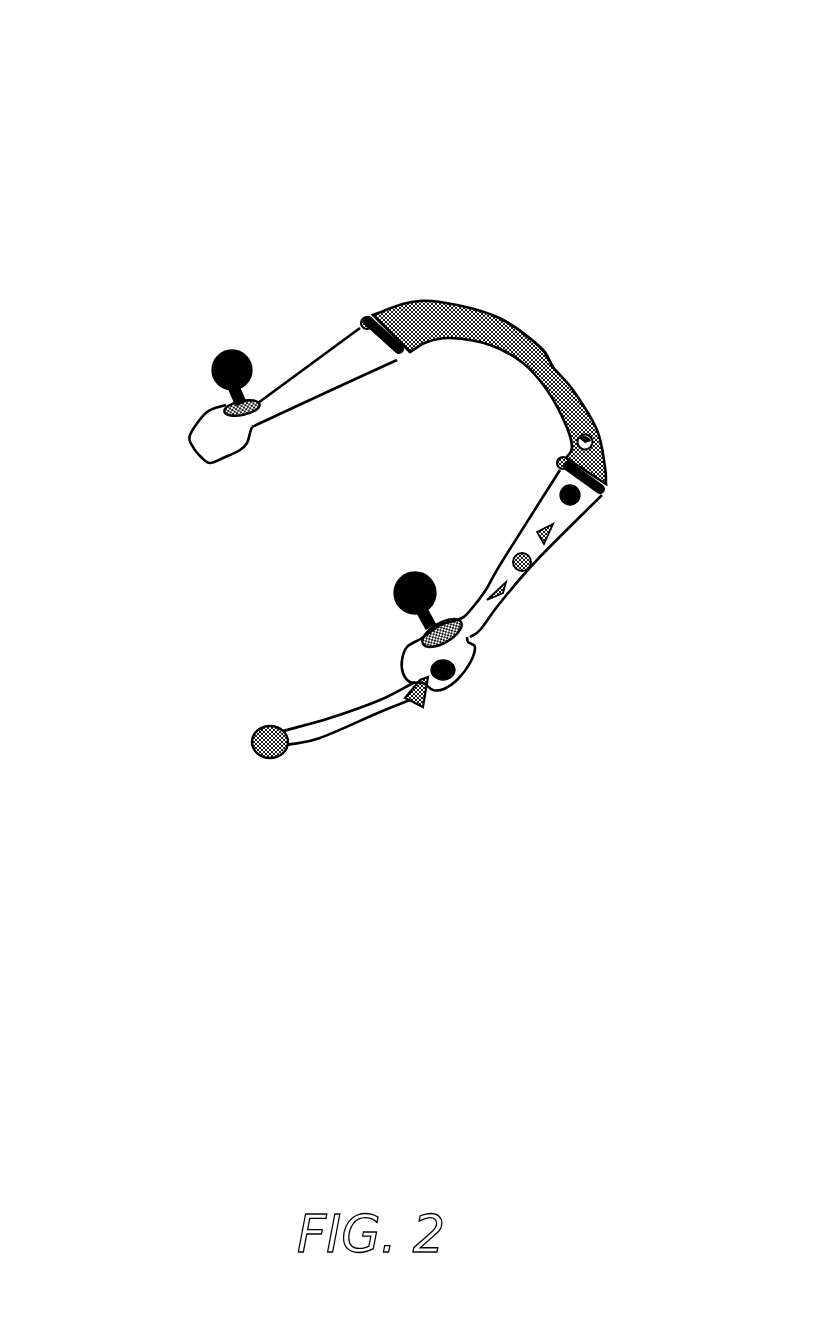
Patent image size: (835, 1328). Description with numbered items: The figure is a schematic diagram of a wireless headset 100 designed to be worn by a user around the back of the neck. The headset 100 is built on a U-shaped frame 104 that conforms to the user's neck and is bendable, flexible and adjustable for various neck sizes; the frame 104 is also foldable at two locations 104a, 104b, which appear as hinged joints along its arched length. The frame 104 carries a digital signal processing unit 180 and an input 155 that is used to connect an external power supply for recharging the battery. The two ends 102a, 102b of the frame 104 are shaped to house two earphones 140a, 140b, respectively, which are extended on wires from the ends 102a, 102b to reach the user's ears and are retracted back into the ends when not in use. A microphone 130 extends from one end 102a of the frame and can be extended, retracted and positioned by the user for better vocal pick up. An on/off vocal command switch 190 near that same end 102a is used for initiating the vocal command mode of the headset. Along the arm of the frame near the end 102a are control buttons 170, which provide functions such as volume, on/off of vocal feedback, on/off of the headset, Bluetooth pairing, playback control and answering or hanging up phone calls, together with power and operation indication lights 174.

The wireless headset 100 is at (122, 57).
The end of U-shaped frame 102a is at (455, 643).
The end of U-shaped frame 102b is at (223, 403).
The U-shaped frame 104 is at (488, 308).
The foldable location 104a is at (608, 493).
The foldable location 104b is at (368, 308).
The microphone 130 is at (315, 742).
The earphone 140a is at (395, 607).
The earphone 140b is at (253, 360).
The input 155 is at (607, 435).
The control buttons 170 is at (532, 563).
The power and operation indication lights 174 is at (580, 500).
The digital signal processing unit 180 is at (553, 353).
The vocal command switch 190 is at (447, 690).